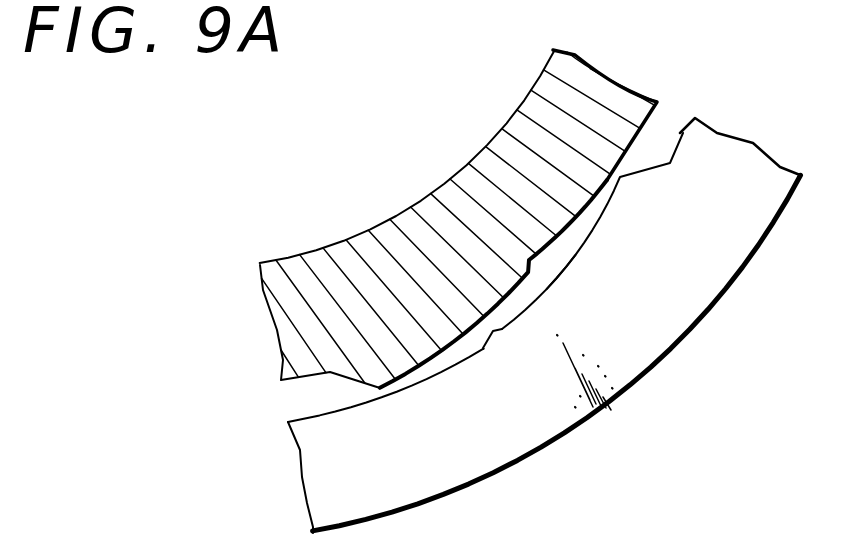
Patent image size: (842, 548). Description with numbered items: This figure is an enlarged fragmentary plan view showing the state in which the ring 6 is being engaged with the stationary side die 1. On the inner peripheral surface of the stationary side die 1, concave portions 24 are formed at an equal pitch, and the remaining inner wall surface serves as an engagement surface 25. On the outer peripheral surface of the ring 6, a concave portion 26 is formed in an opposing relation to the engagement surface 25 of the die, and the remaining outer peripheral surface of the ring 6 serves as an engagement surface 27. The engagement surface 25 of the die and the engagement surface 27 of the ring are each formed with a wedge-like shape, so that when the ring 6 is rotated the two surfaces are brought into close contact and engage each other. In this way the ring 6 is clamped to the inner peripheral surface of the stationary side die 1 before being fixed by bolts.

The stationary side die 1 is at (700, 265).
The ring 6 is at (487, 167).
The concave portion 24 is at (680, 133).
The engagement surface 25 is at (585, 248).
The concave portion 26 is at (653, 117).
The engagement surface 27 is at (483, 332).